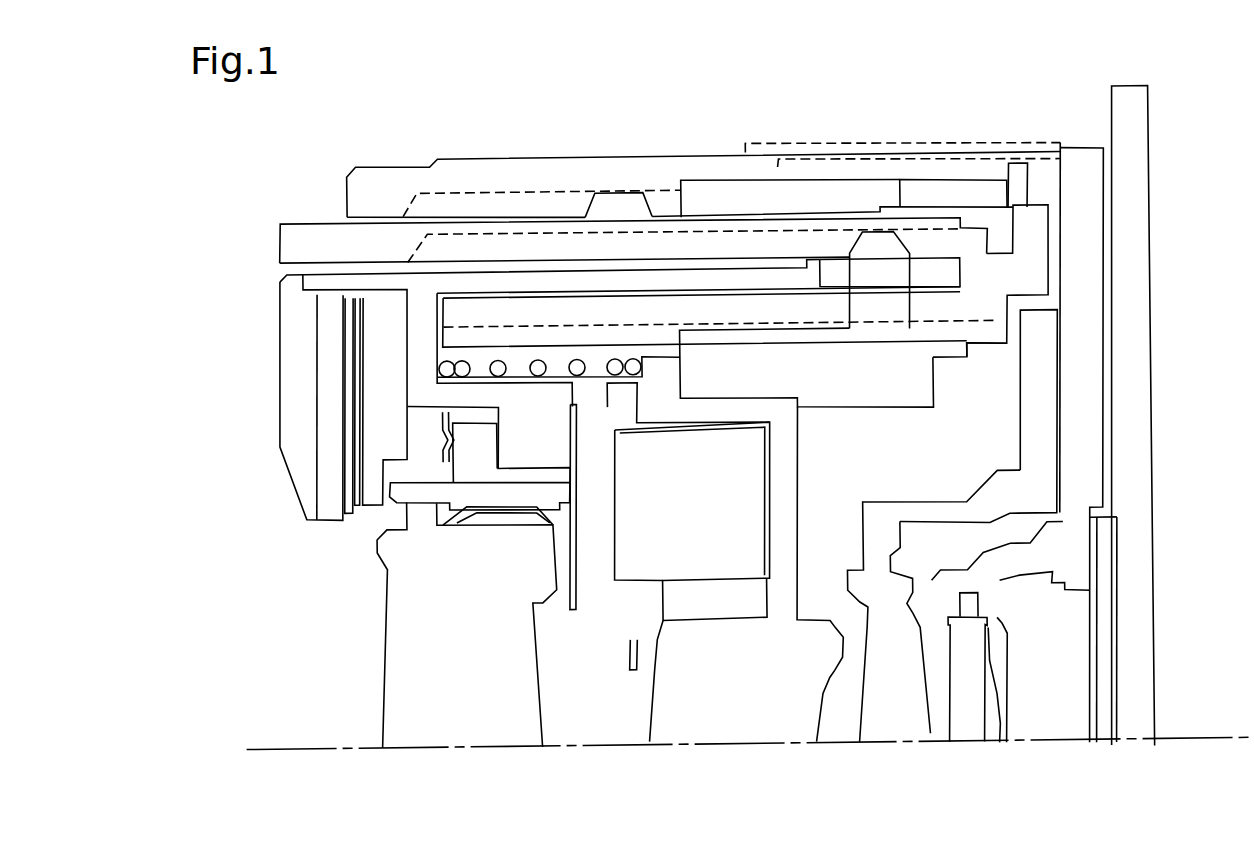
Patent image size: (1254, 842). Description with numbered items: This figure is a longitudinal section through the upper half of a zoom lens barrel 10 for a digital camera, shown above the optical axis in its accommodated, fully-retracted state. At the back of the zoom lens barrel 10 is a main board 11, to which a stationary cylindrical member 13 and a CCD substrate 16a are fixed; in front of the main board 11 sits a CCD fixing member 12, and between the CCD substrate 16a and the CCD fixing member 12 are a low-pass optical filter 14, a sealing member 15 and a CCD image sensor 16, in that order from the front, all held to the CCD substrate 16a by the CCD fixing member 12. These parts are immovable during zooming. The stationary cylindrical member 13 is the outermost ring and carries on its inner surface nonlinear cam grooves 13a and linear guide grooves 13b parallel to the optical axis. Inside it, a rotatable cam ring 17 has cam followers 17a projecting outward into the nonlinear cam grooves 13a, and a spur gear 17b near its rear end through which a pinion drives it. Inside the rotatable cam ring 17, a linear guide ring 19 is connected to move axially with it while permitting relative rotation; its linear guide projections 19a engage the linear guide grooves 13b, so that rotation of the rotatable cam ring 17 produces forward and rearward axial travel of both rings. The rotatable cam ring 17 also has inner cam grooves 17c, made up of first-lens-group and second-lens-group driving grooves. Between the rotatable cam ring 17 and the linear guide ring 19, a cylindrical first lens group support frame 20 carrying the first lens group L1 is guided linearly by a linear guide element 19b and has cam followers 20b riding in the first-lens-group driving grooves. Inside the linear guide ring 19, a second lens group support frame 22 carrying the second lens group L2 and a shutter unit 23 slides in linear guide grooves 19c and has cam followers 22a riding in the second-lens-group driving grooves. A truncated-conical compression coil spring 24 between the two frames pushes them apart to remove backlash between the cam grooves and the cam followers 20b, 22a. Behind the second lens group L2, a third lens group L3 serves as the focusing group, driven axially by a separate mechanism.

The zoom lens barrel 10 is at (218, 602).
The main board 11 is at (1172, 415).
The CCD fixing member 12 is at (1151, 443).
The stationary cylindrical member 13 is at (703, 161).
The nonlinear cam grooves 13a is at (541, 160).
The linear guide grooves 13b is at (919, 132).
The low-pass optical filter 14 is at (965, 705).
The sealing member 15 is at (1010, 717).
The CCD image sensor 16 is at (1046, 694).
The CCD substrate 16a is at (1122, 665).
The rotatable cam ring 17 is at (633, 181).
The cam followers 17a is at (618, 162).
The spur gear 17b is at (953, 154).
The cam grooves 17c is at (683, 173).
The linear guide ring 19 is at (1066, 360).
The linear guide projections 19a is at (1029, 153).
The linear guide element 19b is at (718, 374).
The linear guide grooves 19c is at (989, 368).
The first lens group support frame 20 is at (519, 391).
The cam followers 20b is at (878, 214).
The second lens group support frame 22 is at (772, 535).
The cam followers 22a is at (896, 356).
The shutter unit 23 is at (614, 676).
The compression coil spring 24 is at (449, 373).
The first lens group L1 is at (478, 615).
The second lens group L2 is at (678, 722).
The third lens group L3 is at (935, 645).